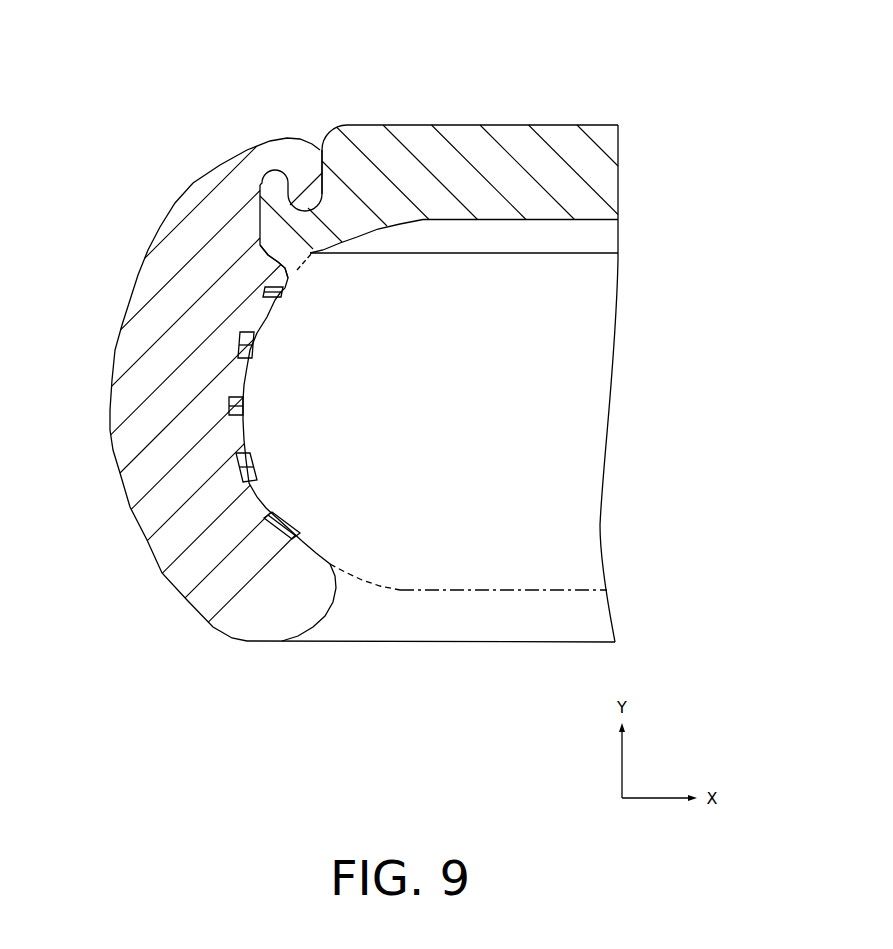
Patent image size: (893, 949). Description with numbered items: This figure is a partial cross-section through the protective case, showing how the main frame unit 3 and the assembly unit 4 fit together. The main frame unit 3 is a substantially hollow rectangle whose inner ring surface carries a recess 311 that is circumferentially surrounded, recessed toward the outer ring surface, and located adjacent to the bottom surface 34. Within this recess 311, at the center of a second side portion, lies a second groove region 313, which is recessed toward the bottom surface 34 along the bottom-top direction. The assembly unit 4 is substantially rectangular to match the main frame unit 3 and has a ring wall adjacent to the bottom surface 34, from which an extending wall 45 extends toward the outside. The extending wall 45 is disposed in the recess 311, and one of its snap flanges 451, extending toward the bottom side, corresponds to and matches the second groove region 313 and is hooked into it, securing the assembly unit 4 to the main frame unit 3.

The main frame unit 3 is at (197, 180).
The assembly unit 4 is at (553, 125).
The bottom surface 34 is at (322, 147).
The extending wall 45 is at (278, 242).
The recess 311 is at (258, 222).
The second groove region 313 is at (277, 177).
The snap flange 451 is at (270, 190).